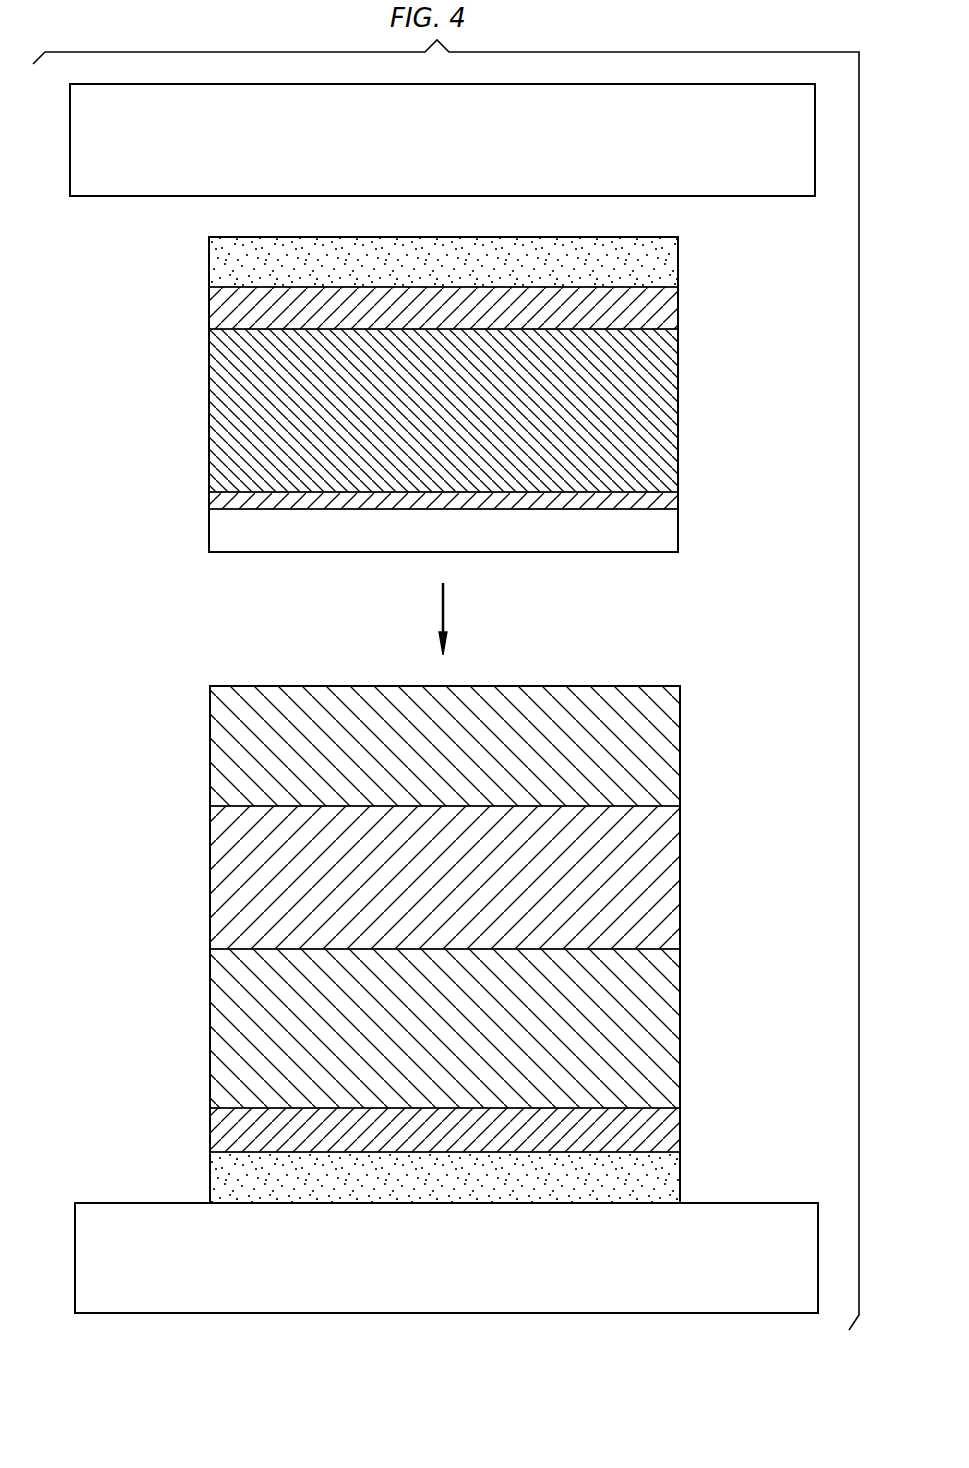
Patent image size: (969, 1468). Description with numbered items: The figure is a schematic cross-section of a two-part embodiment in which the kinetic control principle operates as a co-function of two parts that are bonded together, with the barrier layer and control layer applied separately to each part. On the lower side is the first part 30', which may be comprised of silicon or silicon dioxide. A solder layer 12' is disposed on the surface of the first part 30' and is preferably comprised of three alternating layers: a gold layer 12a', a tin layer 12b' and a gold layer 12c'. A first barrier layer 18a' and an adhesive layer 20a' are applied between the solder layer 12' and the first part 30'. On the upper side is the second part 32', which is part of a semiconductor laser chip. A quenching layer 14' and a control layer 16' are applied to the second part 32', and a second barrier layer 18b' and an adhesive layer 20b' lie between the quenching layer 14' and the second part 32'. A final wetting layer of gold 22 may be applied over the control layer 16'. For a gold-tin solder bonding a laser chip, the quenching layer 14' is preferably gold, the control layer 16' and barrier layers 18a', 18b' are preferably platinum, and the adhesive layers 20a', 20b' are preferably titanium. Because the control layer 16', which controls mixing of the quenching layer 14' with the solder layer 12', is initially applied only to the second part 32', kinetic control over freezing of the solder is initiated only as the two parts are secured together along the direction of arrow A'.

The second part 32' is at (446, 164).
The adhesive layer 20b' is at (481, 262).
The second barrier layer 18b' is at (481, 308).
The quenching layer 14' is at (478, 410).
The control layer 16' is at (478, 492).
The wetting layer of gold 22 is at (665, 538).
The arrow A' is at (457, 619).
The solder layer 12' is at (531, 897).
The gold layer 12c' is at (485, 746).
The tin layer 12b' is at (485, 877).
The gold layer 12a' is at (485, 1028).
The first barrier layer 18a' is at (483, 1130).
The adhesive layer 20a' is at (483, 1177).
The first part 30' is at (450, 1231).